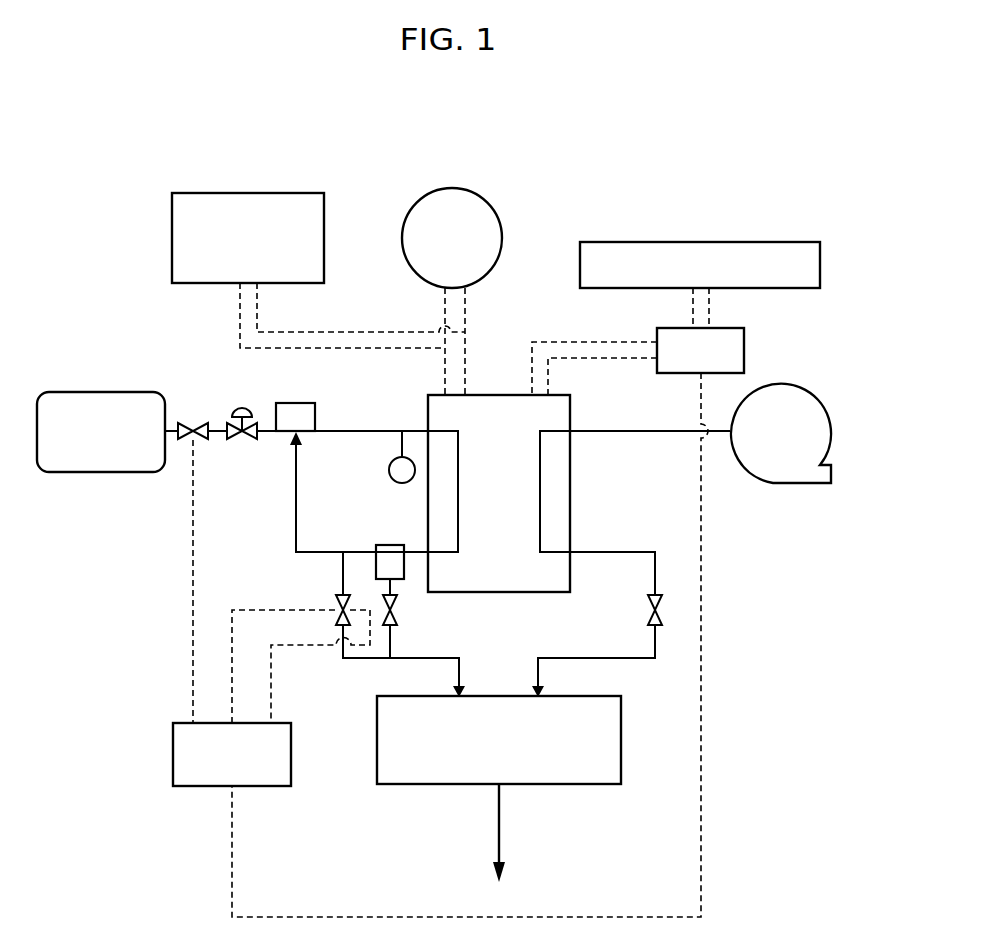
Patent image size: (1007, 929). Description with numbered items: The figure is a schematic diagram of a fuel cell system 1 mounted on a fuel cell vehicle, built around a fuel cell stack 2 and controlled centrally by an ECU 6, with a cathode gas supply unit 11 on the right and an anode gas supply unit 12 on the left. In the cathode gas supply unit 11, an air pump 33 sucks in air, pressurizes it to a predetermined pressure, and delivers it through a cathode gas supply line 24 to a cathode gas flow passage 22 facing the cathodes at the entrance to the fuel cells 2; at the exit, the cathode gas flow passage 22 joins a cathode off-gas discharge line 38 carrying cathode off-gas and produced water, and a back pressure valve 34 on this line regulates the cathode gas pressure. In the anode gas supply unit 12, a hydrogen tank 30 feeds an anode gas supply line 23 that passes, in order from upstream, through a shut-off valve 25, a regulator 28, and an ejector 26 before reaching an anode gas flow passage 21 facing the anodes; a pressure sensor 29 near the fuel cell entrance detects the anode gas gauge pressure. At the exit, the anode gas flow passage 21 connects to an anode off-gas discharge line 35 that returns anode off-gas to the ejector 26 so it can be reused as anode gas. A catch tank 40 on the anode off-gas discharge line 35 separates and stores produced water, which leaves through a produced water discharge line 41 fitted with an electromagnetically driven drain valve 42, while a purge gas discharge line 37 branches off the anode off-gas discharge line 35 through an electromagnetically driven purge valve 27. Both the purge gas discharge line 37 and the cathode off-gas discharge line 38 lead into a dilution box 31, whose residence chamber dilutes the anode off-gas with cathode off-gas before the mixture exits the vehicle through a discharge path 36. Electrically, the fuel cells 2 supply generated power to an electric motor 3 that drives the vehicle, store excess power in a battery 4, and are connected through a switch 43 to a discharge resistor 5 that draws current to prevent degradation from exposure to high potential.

The fuel cell system 1 is at (601, 188).
The fuel cell stack 2 is at (488, 395).
The electric motor 3 is at (456, 188).
The battery 4 is at (261, 193).
The discharge resistor 5 is at (713, 242).
The ECU 6 is at (173, 755).
The cathode gas supply unit 11 is at (750, 520).
The anode gas supply unit 12 is at (158, 515).
The anode gas flow passage 21 is at (458, 462).
The cathode gas flow passage 22 is at (540, 462).
The anode gas supply line 23 is at (343, 440).
The cathode gas supply line 24 is at (630, 431).
The shut-off valve 25 is at (190, 418).
The ejector 26 is at (316, 410).
The purge valve 27 is at (336, 620).
The regulator 28 is at (246, 408).
The pressure sensor 29 is at (392, 478).
The hydrogen tank 30 is at (108, 392).
The dilution box 31 is at (621, 737).
The air pump 33 is at (821, 398).
The back pressure valve 34 is at (646, 608).
The anode off-gas discharge line 35 is at (317, 555).
The discharge path 36 is at (497, 820).
The purge gas discharge line 37 is at (336, 586).
The cathode off-gas discharge line 38 is at (637, 552).
The catch tank 40 is at (378, 545).
The produced water discharge line 41 is at (403, 588).
The drain valve 42 is at (399, 618).
The switch 43 is at (744, 350).